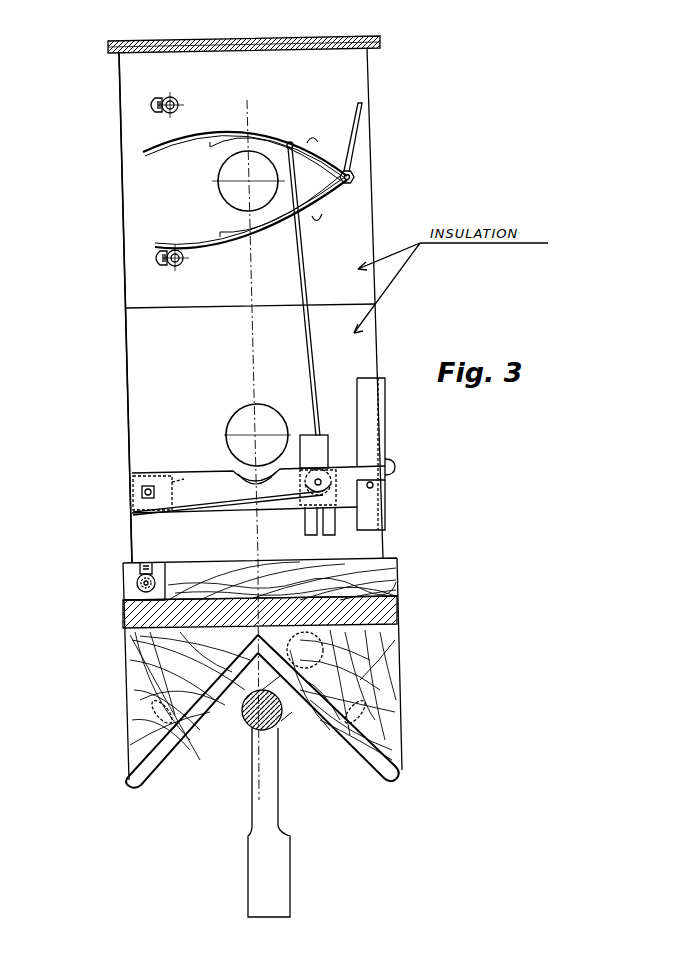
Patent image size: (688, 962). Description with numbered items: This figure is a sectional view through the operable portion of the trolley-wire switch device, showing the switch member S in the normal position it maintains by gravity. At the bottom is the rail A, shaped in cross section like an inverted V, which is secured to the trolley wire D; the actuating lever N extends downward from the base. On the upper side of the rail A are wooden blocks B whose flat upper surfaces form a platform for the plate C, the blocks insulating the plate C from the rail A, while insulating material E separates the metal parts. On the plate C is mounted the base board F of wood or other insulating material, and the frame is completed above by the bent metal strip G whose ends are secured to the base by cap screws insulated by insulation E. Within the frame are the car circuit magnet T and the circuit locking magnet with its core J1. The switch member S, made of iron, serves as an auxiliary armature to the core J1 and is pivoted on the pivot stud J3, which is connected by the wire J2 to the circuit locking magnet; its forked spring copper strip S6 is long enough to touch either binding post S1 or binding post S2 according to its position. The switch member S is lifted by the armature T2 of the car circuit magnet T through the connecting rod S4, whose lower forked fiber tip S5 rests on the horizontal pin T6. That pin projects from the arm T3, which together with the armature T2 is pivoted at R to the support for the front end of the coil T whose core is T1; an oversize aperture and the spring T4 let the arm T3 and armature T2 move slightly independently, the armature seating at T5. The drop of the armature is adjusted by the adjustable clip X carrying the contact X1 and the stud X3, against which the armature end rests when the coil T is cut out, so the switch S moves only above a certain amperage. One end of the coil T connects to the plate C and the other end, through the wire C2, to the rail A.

The bent metal strip G is at (380, 37).
The insulating material E is at (108, 50).
The binding post S2 is at (176, 93).
The binding post S1 is at (172, 268).
The core J1 is at (233, 189).
The upper spring leaf S6 is at (203, 133).
The switch member S is at (268, 232).
The pivot stud J3 is at (355, 177).
The wire J2 is at (357, 119).
The connecting rod S4 is at (302, 315).
The car circuit magnet T is at (258, 435).
The coil T1 is at (249, 417).
The armature seat T5 is at (250, 481).
The forked fiber tip S5 is at (319, 440).
The horizontal pin T6 is at (326, 477).
The armature T2 is at (287, 508).
The arm T3 is at (225, 497).
The spring T4 is at (150, 505).
The pivot R is at (148, 486).
The adjustable clip X is at (371, 426).
The contact X1 is at (393, 465).
The stud X3 is at (374, 487).
The base board F is at (397, 576).
The wire C2 is at (136, 584).
The plate C is at (397, 612).
The wooden block B is at (387, 711).
The rail A is at (199, 711).
The trolley wire D is at (283, 720).
The actuating lever N is at (272, 857).